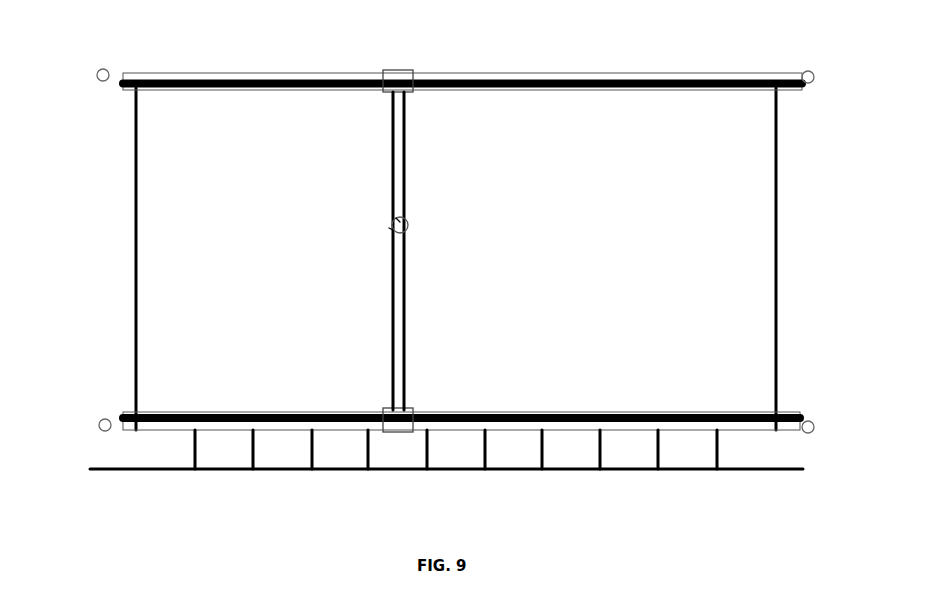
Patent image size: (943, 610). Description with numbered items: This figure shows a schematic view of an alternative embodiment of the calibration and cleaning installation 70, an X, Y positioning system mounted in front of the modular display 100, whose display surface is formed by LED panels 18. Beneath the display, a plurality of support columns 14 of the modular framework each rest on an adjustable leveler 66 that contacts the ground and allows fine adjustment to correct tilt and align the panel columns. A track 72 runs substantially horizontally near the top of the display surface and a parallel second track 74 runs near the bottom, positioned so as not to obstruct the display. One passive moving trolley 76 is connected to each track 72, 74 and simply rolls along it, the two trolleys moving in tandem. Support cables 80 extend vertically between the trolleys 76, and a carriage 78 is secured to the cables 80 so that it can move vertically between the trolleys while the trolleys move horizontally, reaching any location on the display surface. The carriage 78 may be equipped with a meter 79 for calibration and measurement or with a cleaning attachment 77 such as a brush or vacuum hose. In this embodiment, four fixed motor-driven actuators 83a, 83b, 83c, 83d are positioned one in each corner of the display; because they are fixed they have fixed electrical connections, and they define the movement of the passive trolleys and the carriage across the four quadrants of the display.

The calibration and cleaning installation 70 is at (98, 223).
The track 72 is at (753, 83).
The second track 74 is at (786, 418).
The moving trolley 76 is at (420, 70).
The cleaning attachment 77 is at (410, 228).
The carriage 78 is at (396, 218).
The meter 79 is at (393, 229).
The cable 80 is at (392, 152).
The motor-driven actuator 83a is at (107, 73).
The motor-driven actuator 83b is at (805, 71).
The motor-driven actuator 83c is at (100, 430).
The motor-driven actuator 83d is at (815, 422).
The LED panel 18 is at (791, 259).
The support column 14 is at (310, 440).
The adjustable leveler 66 is at (312, 470).
The modular display 100 is at (681, 448).